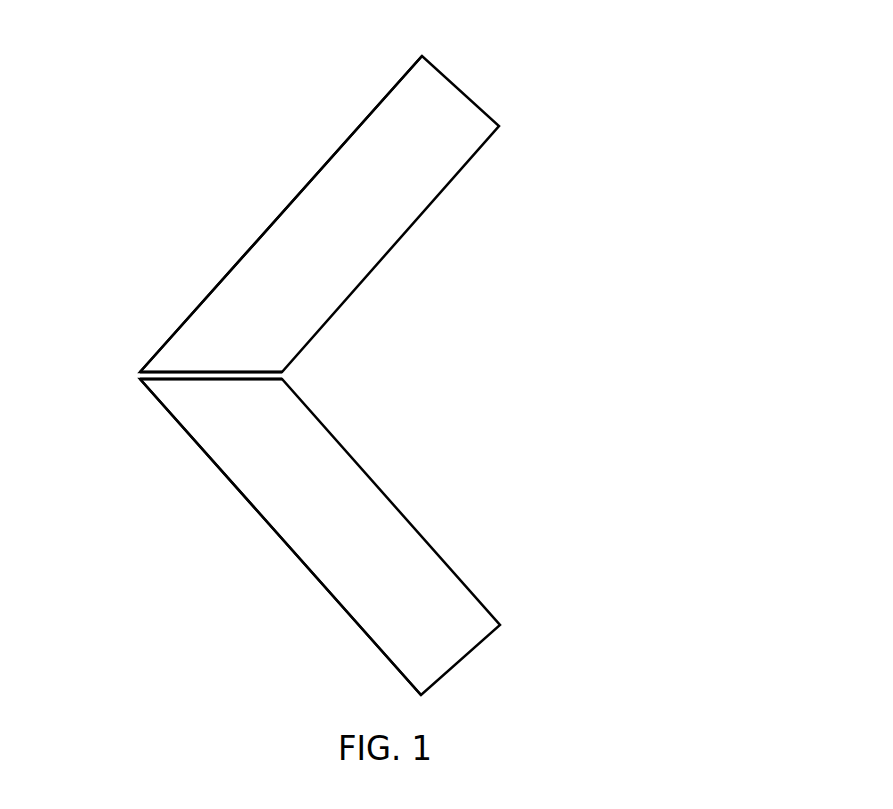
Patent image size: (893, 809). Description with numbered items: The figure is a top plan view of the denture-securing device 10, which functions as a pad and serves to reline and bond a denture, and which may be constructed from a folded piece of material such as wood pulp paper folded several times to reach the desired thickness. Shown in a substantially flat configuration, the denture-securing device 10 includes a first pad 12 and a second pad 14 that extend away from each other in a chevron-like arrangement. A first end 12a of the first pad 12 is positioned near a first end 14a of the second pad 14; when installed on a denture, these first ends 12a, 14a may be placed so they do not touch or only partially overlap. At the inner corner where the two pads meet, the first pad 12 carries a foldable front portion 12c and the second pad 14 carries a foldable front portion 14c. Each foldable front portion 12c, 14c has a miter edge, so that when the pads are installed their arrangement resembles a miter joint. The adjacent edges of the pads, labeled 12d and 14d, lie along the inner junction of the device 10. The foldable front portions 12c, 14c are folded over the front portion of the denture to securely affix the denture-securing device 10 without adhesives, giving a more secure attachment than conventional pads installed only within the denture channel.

The denture-securing device 10 is at (115, 187).
The first pad 12 is at (467, 94).
The first end of the first pad 12a is at (167, 342).
The foldable front portion of the first pad 12c is at (140, 372).
The first member bottom edge 12d is at (236, 372).
The second pad 14 is at (467, 656).
The first end of the second pad 14a is at (166, 407).
The foldable front portion of the second pad 14c is at (140, 379).
The second member top edge 14d is at (236, 380).